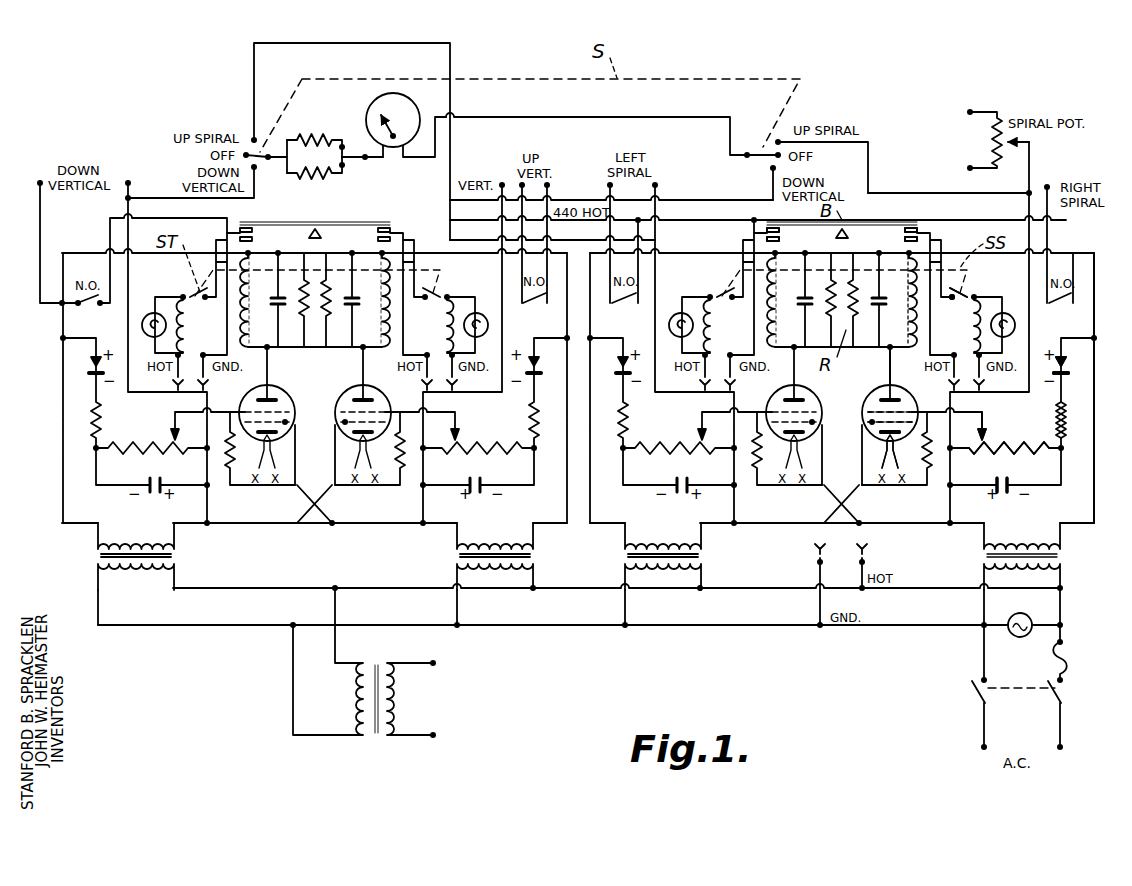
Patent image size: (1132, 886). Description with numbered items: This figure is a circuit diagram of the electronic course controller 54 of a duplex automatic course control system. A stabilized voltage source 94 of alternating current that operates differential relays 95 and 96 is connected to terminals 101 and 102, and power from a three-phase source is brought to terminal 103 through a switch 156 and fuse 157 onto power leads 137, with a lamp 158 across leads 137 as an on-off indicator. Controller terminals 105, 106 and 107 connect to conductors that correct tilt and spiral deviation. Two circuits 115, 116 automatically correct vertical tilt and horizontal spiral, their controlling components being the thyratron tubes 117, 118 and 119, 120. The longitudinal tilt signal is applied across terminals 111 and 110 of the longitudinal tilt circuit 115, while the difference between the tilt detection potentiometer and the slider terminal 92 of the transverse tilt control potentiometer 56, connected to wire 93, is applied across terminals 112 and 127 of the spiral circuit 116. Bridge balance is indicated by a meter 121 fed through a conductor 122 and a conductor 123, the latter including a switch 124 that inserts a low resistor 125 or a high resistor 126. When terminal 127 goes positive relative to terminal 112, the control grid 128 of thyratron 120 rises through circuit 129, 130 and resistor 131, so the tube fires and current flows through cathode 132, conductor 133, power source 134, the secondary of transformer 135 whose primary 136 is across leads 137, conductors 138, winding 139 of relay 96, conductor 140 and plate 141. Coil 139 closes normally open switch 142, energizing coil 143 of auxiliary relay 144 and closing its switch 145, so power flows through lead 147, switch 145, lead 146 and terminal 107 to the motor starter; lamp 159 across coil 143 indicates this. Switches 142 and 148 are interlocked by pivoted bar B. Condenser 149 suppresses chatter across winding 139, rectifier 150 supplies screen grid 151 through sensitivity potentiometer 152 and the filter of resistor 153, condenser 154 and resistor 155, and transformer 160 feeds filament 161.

The course controller 54 is at (607, 634).
The transverse tilt control potentiometer 56 is at (989, 140).
The slider terminal 92 is at (1003, 137).
The wire 93 is at (1032, 151).
The stabilized voltage source 94 is at (38, 184).
The differential relay 95 is at (291, 219).
The differential relay 96 is at (849, 226).
The terminal 101 is at (984, 748).
The terminal 102 is at (1060, 748).
The terminal 103 is at (550, 185).
The controller terminal 105 is at (521, 182).
The controller terminal 106 is at (609, 183).
The controller terminal 107 is at (1049, 186).
The course controller terminal 110 is at (502, 182).
The course controller terminal 111 is at (129, 180).
The course controller terminal 112 is at (658, 185).
The longitudinal tilt circuit 115 is at (307, 529).
The transverse tilt circuit 116 is at (811, 529).
The thyratron tube 117 is at (281, 396).
The thyratron tube 118 is at (342, 398).
The thyratron tube 119 is at (765, 404).
The thyratron tube 120 is at (912, 397).
The meter 121 is at (396, 99).
The conductor 122 is at (640, 116).
The conductor 123 is at (384, 160).
The switch 124 is at (355, 161).
The resistor 125 is at (315, 136).
The resistor 126 is at (313, 177).
The course controller terminal 127 is at (1026, 191).
The control grid 128 is at (866, 412).
The circuit 129 is at (654, 328).
The circuit 130 is at (760, 526).
The resistor 131 is at (930, 483).
The cathode 132 is at (866, 433).
The conductor 133 is at (898, 526).
The power source 134 is at (1037, 549).
The transformer 135 is at (984, 556).
The primary 136 is at (1037, 571).
The power leads 137 is at (1062, 604).
The conductor 138 is at (1092, 483).
The winding 139 is at (910, 316).
The conductor 140 is at (910, 351).
The plate 141 is at (876, 350).
The normally open switch 142 is at (922, 226).
The coil 143 is at (968, 316).
The auxiliary relay 144 is at (983, 296).
The normally open switch 145 is at (1075, 298).
The lead 146 is at (1067, 223).
The lead 147 is at (995, 221).
The switch 148 is at (762, 226).
The condenser 149 is at (908, 301).
The rectifier 150 is at (1068, 366).
The screen grid 151 is at (869, 398).
The potentiometer 152 is at (1057, 410).
The resistor 153 is at (1038, 453).
The condenser 154 is at (1008, 497).
The resistor 155 is at (993, 438).
The switch 156 is at (1018, 691).
The fuse 157 is at (1066, 657).
The lamp 158 is at (1020, 638).
The lamp 159 is at (1016, 325).
The transformer 160 is at (380, 743).
The filament 161 is at (868, 450).